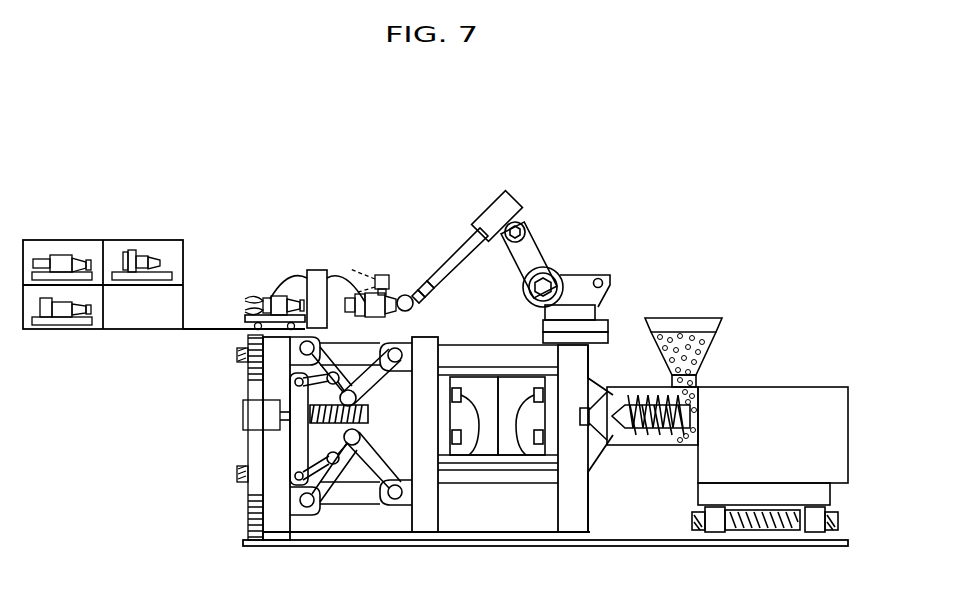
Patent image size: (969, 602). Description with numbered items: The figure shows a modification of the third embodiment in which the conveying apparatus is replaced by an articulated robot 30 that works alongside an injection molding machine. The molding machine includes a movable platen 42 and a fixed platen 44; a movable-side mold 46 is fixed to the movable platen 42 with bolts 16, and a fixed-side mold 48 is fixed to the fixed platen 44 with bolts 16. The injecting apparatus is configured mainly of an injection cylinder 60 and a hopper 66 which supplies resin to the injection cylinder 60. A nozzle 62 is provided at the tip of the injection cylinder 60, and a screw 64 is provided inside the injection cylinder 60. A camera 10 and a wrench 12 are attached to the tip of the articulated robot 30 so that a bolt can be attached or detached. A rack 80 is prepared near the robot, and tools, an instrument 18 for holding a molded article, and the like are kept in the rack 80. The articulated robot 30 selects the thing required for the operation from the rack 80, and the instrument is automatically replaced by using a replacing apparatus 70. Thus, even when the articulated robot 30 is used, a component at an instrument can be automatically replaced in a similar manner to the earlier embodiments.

The camera 10 is at (383, 271).
The wrench 12 is at (360, 311).
The bolts 16 is at (461, 445).
The instrument for holding a molded article 18 is at (274, 294).
The articulated robot 30 is at (539, 248).
The movable platen 42 is at (428, 512).
The fixed platen 44 is at (572, 521).
The movable-side mold 46 is at (455, 457).
The fixed-side mold 48 is at (538, 478).
The injection cylinder 60 is at (654, 447).
The nozzle 62 is at (593, 440).
The screw 64 is at (690, 447).
The hopper 66 is at (682, 318).
The replacing apparatus 70 is at (317, 268).
The rack 80 is at (64, 332).